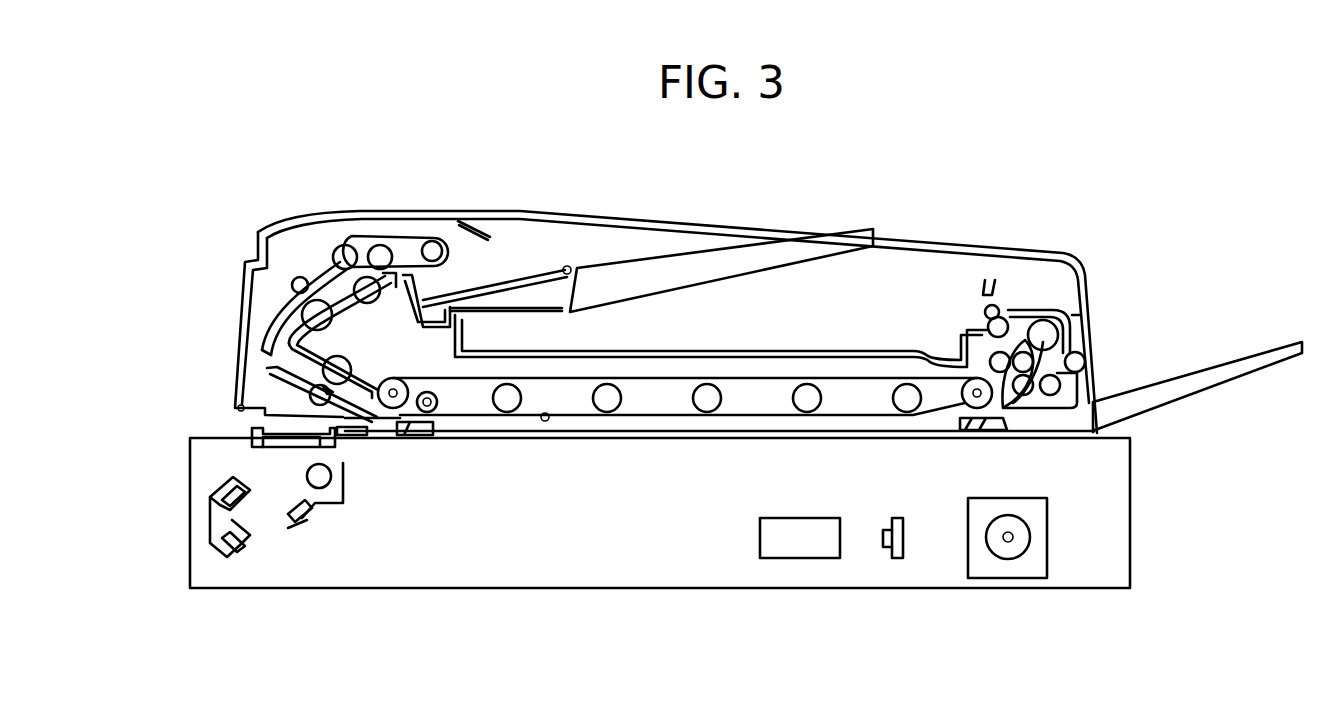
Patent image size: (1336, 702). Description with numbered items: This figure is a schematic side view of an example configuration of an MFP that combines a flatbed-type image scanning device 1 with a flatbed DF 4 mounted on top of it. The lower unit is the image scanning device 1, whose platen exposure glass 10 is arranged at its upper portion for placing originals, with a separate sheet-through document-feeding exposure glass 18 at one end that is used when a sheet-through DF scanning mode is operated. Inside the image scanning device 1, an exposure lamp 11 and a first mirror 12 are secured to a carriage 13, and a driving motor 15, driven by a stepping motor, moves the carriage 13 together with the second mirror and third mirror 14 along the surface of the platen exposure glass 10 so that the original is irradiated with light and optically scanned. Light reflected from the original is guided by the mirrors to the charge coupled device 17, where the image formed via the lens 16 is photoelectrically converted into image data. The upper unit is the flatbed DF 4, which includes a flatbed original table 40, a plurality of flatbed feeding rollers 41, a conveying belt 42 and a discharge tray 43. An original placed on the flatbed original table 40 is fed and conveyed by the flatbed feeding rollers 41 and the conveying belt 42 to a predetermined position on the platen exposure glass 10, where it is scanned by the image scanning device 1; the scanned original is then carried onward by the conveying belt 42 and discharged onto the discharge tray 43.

The image scanning device 1 is at (1131, 510).
The flatbed DF 4 is at (572, 212).
The platen exposure glass 10 is at (672, 443).
The exposure lamp 11 is at (332, 476).
The first mirror 12 is at (303, 528).
The carriage 13 is at (330, 507).
The second mirror and third mirror 14 is at (210, 522).
The driving motor 15 is at (1017, 498).
The lens 16 is at (812, 518).
The charge coupled device (CCD) 17 is at (900, 517).
The sheet-through document-feeding exposure glass 18 is at (290, 447).
The flatbed original table 40 is at (650, 284).
The flatbed feeding rollers 41 is at (388, 237).
The conveying belt 42 is at (757, 378).
The discharge tray 43 is at (1237, 358).